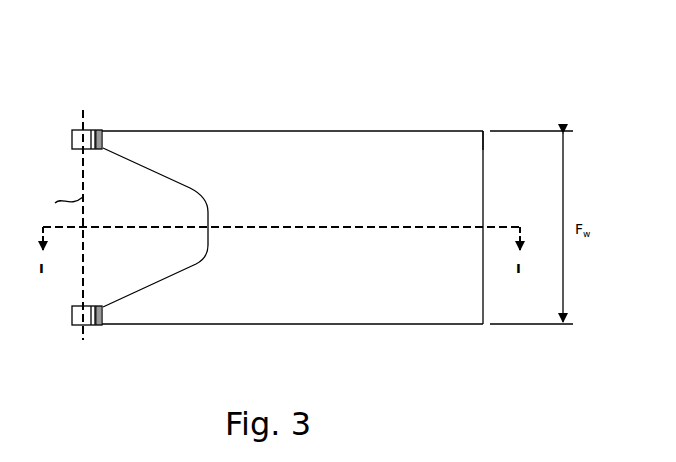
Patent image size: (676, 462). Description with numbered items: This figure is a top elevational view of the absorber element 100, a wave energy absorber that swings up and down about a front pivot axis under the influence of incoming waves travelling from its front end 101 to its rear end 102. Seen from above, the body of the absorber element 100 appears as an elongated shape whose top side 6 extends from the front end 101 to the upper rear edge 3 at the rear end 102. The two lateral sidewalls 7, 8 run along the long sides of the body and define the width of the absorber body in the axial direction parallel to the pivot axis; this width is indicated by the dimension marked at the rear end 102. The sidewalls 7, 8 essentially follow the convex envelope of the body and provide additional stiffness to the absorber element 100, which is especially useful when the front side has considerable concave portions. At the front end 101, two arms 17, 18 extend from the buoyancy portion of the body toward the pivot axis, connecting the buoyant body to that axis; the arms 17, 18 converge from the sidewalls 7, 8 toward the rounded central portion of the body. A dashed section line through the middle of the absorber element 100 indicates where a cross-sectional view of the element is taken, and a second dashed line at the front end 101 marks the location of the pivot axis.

The absorber element 100 is at (135, 78).
The front end 101 is at (83, 106).
The rear end 102 is at (487, 124).
The upper rear edge 3 is at (483, 178).
The top side 6 is at (331, 204).
The lateral sidewall 7 is at (292, 131).
The lateral sidewall 8 is at (300, 325).
The arm 17 is at (115, 138).
The arm 18 is at (130, 315).